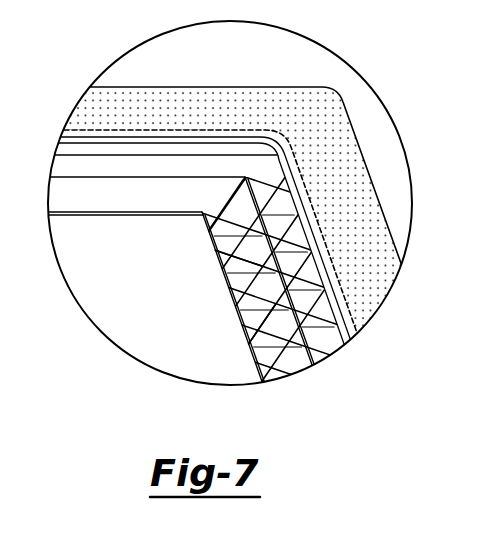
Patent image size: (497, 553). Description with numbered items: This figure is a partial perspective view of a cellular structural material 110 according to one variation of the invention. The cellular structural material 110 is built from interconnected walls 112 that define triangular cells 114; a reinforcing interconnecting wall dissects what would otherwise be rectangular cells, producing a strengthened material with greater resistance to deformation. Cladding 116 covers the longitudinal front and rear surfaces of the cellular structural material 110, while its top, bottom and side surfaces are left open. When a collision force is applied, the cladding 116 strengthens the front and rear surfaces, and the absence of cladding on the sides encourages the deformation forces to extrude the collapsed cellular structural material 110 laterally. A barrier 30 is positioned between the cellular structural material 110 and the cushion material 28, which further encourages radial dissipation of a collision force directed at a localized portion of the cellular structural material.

The cushion material 28 is at (275, 98).
The barrier 30 is at (237, 128).
The cellular structural material 110 is at (358, 313).
The interconnected walls 112 is at (243, 246).
The triangular cells 114 is at (263, 303).
The cladding 116 is at (90, 307).